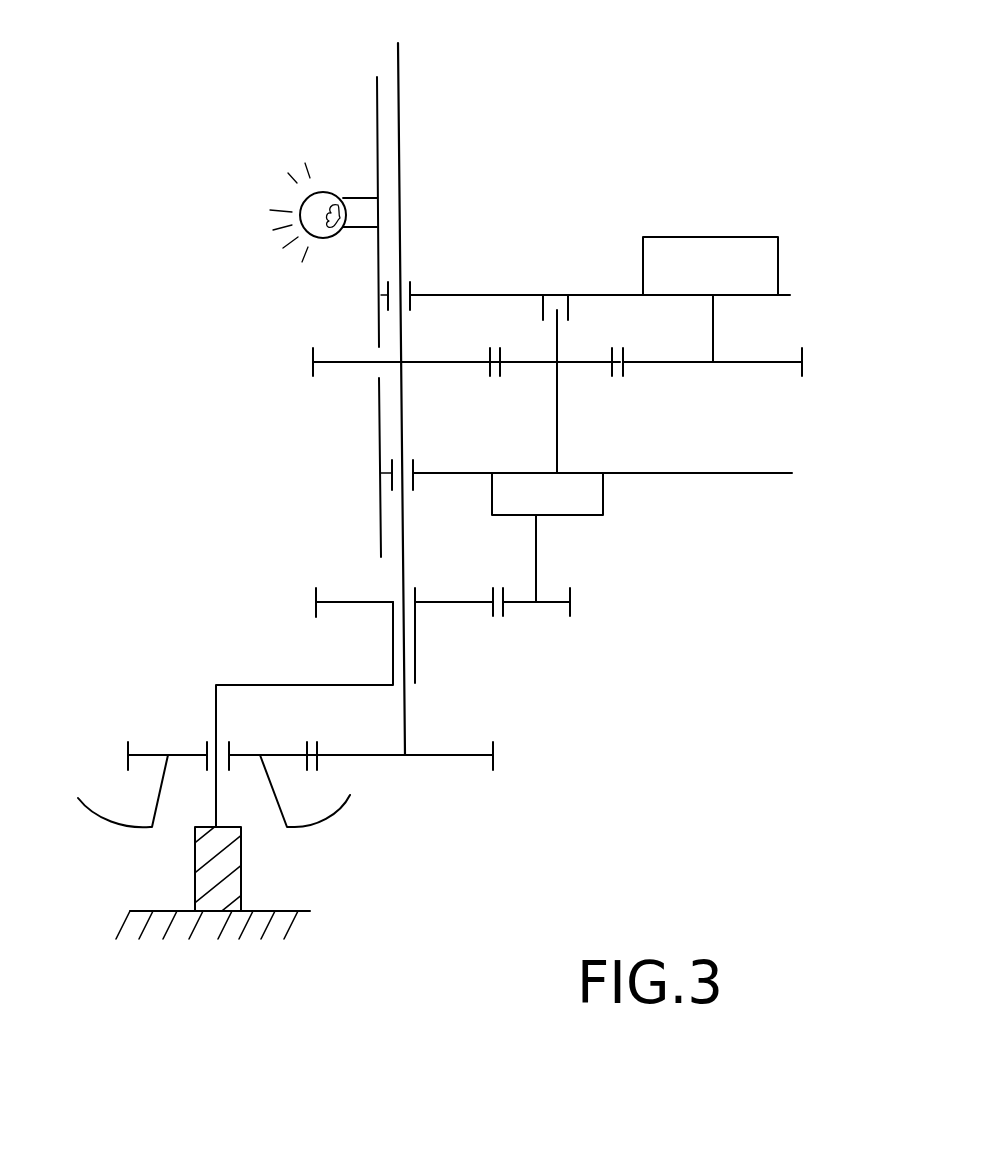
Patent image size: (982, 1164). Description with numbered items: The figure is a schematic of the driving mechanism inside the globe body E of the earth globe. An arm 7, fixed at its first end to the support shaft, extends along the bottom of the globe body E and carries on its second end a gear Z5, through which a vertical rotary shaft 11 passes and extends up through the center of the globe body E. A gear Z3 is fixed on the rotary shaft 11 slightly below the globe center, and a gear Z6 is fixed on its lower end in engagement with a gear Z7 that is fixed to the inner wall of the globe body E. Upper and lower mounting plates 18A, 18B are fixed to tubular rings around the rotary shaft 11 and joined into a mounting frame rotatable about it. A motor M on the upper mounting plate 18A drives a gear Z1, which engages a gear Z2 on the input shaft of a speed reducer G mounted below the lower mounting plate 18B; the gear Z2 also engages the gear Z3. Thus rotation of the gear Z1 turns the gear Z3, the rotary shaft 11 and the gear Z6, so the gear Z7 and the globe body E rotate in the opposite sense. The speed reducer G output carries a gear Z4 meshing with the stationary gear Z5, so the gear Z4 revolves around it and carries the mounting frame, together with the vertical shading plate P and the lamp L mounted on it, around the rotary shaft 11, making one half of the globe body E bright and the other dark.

The rotary shaft 11 is at (400, 63).
The shading plate P is at (377, 110).
The lamp L is at (300, 202).
The upper mounting plate 18A is at (483, 295).
The motor M is at (724, 248).
The gear Z1 is at (754, 337).
The gear Z2 is at (580, 367).
The gear Z3 is at (426, 365).
The lower mounting plate 18B is at (778, 475).
The speed reducer G is at (600, 500).
The gear Z4 is at (572, 568).
The gear Z5 is at (361, 633).
The arm 7 is at (242, 685).
The gear Z6 is at (402, 755).
The gear Z7 is at (128, 756).
The globe body E is at (340, 808).